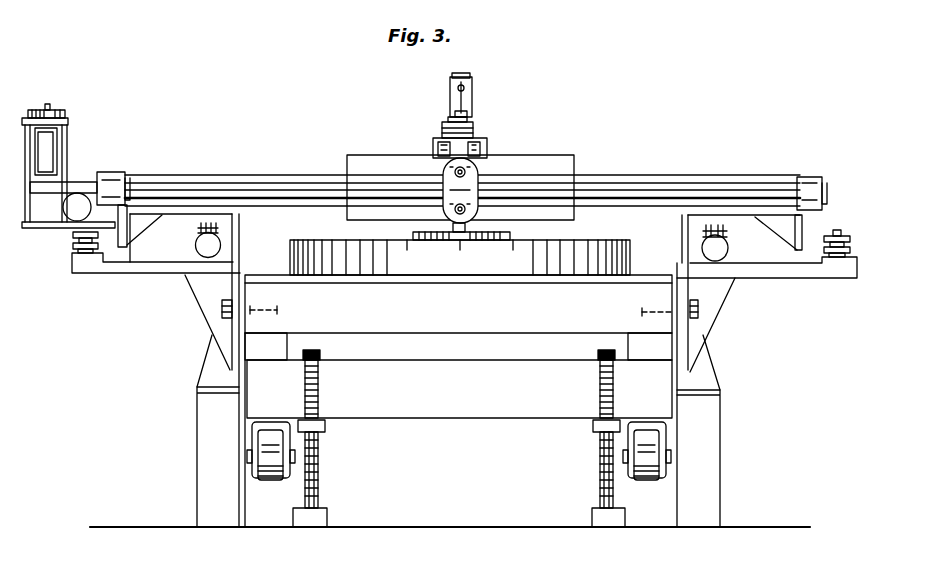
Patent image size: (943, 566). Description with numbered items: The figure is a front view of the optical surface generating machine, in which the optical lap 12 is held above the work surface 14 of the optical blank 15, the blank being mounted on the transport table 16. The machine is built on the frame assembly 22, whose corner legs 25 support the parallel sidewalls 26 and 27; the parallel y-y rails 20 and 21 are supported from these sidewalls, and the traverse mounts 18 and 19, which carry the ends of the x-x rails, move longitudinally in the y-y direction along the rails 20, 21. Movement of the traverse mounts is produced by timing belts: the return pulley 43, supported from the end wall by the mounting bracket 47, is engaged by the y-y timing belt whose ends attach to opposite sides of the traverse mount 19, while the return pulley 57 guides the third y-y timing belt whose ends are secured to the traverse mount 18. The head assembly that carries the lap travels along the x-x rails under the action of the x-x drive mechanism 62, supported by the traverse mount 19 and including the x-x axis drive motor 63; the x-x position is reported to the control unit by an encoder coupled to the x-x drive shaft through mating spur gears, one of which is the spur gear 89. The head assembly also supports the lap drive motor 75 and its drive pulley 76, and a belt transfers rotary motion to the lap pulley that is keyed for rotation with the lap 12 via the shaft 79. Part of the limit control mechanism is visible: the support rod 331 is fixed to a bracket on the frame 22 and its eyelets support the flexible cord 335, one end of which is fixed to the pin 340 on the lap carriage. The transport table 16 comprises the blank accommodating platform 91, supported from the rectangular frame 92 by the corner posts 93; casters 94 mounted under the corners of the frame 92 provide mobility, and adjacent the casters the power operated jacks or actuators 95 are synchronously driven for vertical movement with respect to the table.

The optical lap 12 is at (415, 235).
The work surface 14 is at (320, 240).
The optical blank 15 is at (290, 260).
The transport table 16 is at (450, 425).
The traverse mount 18 is at (745, 213).
The traverse mount 19 is at (170, 212).
The y-y rail 20 is at (208, 247).
The y-y rail 21 is at (720, 248).
The frame assembly 22 is at (193, 453).
The corner legs 25 is at (208, 418).
The sidewall 26 is at (237, 326).
The sidewall 27 is at (680, 355).
The return pulley 43 is at (75, 242).
The mounting bracket 47 is at (156, 270).
The return pulley 57 is at (838, 242).
The x-x drive mechanism 62 is at (67, 100).
The x-x axis drive motor 63 is at (76, 212).
The lap drive motor 75 is at (434, 148).
The drive pulley 76 is at (476, 127).
The shaft 79 is at (470, 228).
The spur gear 89 is at (64, 112).
The blank accommodating platform 91 is at (55, 108).
The rectangular frame 92 is at (528, 422).
The corner posts 93 is at (280, 340).
The casters 94 is at (277, 481).
The power operated jacks or actuators 95 is at (327, 517).
The support rod 331 is at (462, 80).
The flexible cord 335 is at (450, 98).
The pin 340 is at (470, 106).